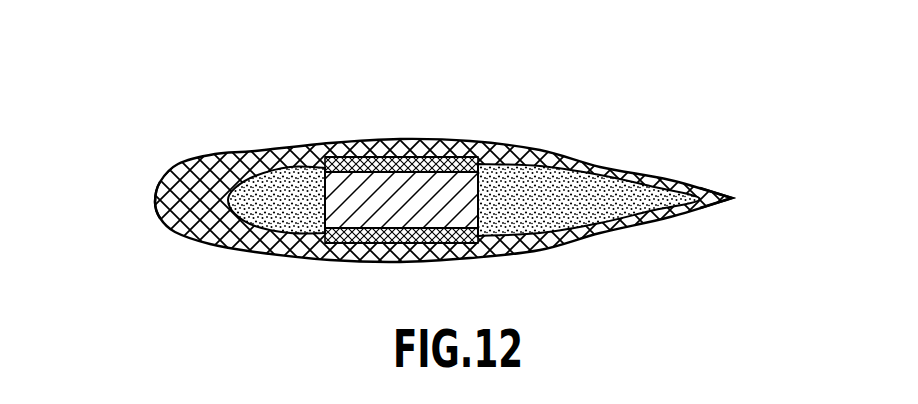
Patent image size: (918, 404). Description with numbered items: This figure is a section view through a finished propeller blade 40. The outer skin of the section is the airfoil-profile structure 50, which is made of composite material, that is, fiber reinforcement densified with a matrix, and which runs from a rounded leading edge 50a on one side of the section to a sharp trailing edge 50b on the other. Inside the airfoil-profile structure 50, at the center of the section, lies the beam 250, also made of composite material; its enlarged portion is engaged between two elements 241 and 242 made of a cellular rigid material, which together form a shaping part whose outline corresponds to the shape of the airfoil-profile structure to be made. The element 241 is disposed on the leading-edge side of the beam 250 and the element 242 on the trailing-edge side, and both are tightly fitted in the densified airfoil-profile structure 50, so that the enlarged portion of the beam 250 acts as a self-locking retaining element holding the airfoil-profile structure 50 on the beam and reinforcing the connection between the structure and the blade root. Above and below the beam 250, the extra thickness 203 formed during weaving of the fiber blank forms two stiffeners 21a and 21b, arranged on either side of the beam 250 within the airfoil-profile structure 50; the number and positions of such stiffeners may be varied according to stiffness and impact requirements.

The propeller blade 40 is at (145, 147).
The airfoil-profile structure 50 is at (245, 152).
The leading edge 50a is at (155, 202).
The trailing edge 50b is at (732, 198).
The beam 250 is at (375, 190).
The stiffener 21a is at (425, 160).
The stiffener 21b is at (369, 248).
The extra thickness 203 is at (461, 158).
The element of cellular rigid material 241 is at (283, 222).
The element of cellular rigid material 242 is at (608, 210).